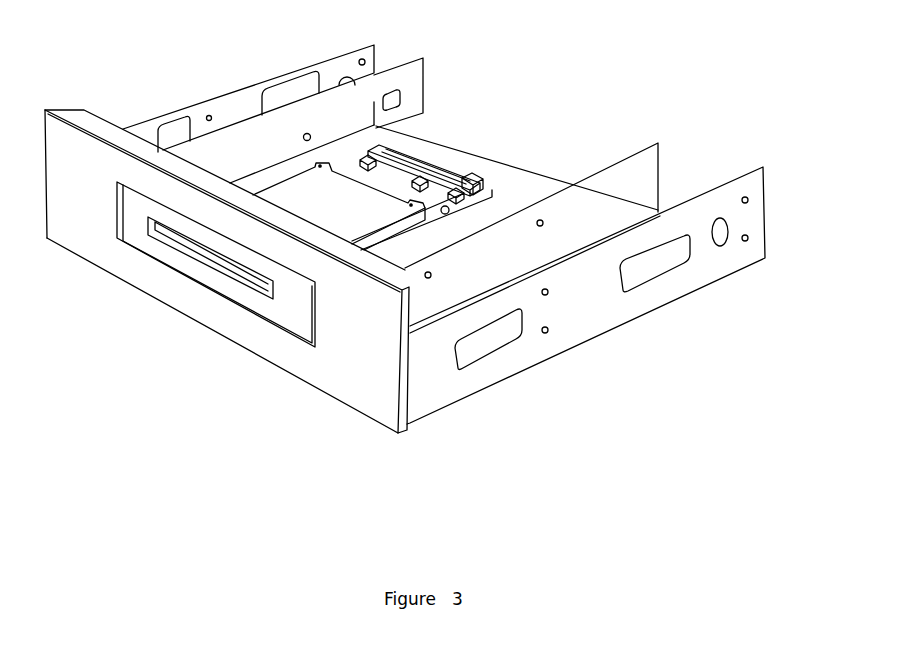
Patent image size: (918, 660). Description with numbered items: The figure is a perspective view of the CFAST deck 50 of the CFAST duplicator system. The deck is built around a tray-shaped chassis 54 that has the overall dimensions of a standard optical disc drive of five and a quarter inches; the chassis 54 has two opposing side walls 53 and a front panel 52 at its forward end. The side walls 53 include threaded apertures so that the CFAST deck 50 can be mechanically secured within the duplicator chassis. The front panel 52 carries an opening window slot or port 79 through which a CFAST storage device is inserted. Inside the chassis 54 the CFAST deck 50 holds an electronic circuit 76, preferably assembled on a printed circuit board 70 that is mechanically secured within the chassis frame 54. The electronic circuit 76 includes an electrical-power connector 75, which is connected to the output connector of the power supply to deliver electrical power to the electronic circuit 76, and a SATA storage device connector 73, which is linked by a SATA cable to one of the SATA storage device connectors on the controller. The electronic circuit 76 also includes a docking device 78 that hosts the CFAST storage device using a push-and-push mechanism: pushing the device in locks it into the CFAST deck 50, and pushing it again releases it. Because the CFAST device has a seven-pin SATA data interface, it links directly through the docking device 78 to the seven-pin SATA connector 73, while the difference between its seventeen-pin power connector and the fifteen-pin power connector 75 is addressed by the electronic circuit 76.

The CFAST deck 50 is at (147, 353).
The front panel 52 is at (343, 382).
The side walls 53 is at (245, 120).
The tray-shaped chassis 54 is at (708, 257).
The printed circuit board 70 is at (480, 200).
The SATA storage device connector 73 is at (453, 162).
The electrical-power connector 75 is at (418, 145).
The electronic circuit 76 is at (400, 193).
The docking device 78 is at (340, 212).
The opening window slot 79 is at (158, 250).